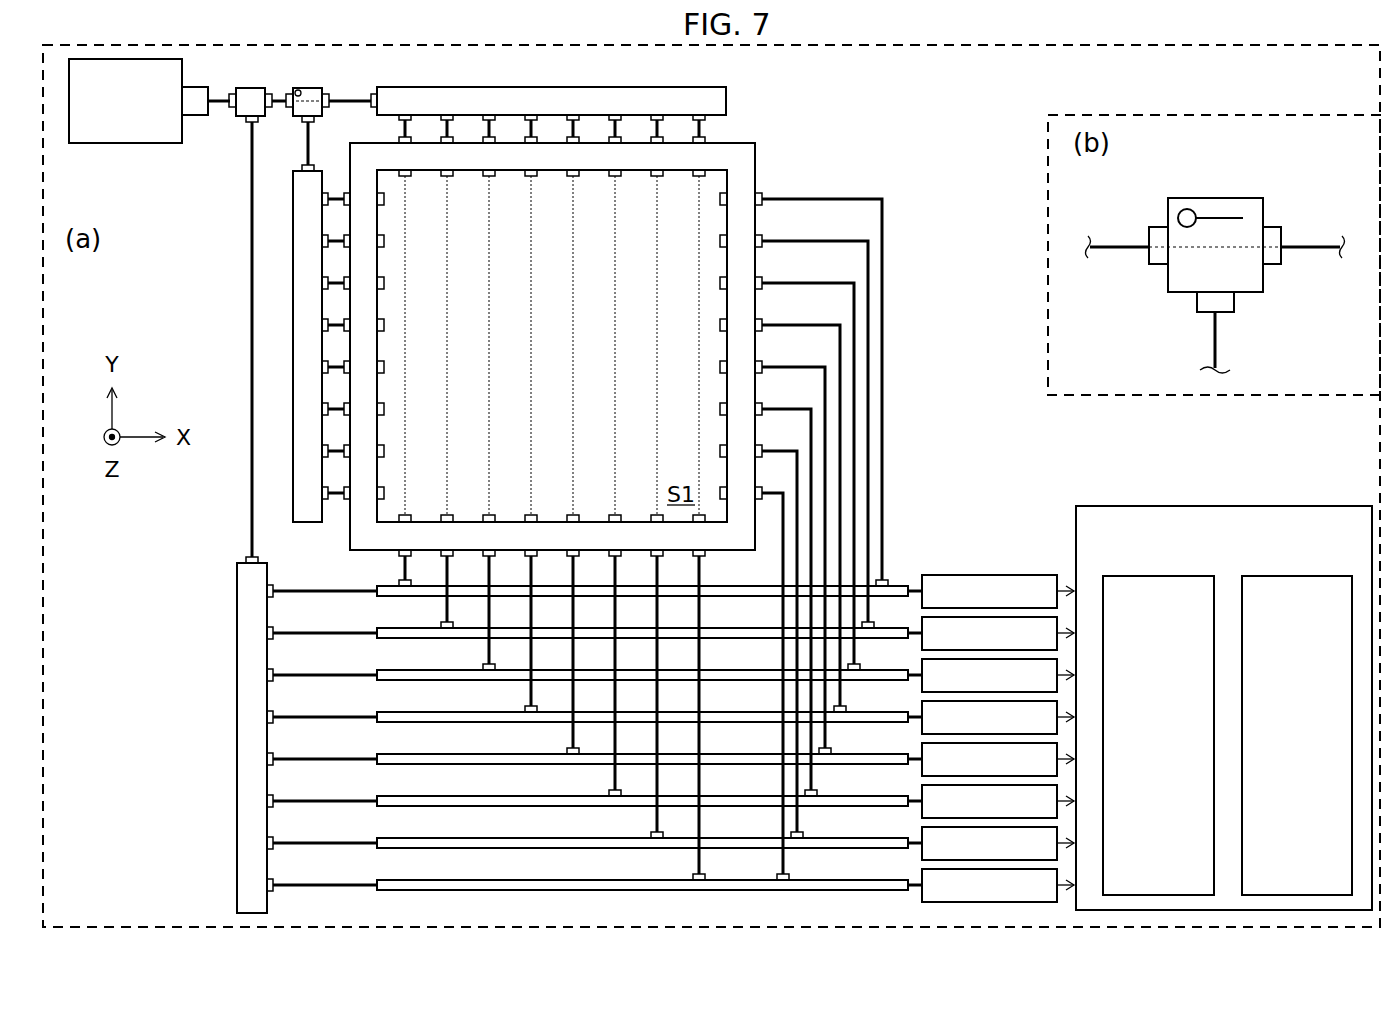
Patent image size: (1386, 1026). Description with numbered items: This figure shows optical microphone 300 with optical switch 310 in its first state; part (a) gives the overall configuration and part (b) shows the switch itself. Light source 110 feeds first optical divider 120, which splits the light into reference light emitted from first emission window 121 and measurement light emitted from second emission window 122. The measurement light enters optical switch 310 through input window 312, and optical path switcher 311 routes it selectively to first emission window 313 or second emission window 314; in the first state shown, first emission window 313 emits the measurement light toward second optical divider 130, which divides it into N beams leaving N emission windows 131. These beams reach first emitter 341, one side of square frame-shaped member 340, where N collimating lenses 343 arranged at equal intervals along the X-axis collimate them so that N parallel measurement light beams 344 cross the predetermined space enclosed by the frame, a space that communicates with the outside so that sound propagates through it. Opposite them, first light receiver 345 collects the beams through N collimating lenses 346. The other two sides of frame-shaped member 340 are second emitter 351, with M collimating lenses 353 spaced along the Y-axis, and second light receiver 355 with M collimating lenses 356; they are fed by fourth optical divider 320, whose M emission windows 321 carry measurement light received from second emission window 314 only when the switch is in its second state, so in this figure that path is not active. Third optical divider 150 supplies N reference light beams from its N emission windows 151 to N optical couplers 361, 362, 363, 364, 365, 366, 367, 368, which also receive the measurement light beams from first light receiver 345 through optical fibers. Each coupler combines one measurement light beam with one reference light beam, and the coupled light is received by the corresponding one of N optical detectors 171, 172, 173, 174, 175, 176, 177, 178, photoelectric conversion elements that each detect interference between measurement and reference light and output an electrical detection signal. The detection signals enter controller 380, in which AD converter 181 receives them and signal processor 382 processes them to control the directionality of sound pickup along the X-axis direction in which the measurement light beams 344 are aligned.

The light source 110 is at (127, 145).
The first optical divider 120 is at (238, 302).
The first emission window 121 is at (250, 123).
The second emission window 122 is at (270, 92).
The second optical divider 130 is at (728, 100).
The emission windows 131 is at (397, 121).
The third optical divider 150 is at (237, 578).
The emission windows 151 is at (267, 592).
The optical detector 171 is at (925, 608).
The optical detector 172 is at (925, 650).
The optical detector 173 is at (925, 692).
The optical detector 174 is at (925, 734).
The optical detector 175 is at (925, 776).
The optical detector 176 is at (925, 818).
The optical detector 177 is at (925, 860).
The optical detector 178 is at (925, 902).
The AD converter 181 is at (1170, 576).
The optical microphone 300 is at (910, 150).
The optical switch 310 is at (312, 88).
The optical path switcher 311 is at (1187, 209).
The input window 312 is at (1149, 240).
The first emission window 313 is at (1281, 240).
The second emission window 314 is at (1218, 313).
The fourth optical divider 320 is at (293, 354).
The emission windows 321 is at (323, 200).
The frame-shaped member 340 is at (757, 150).
The first emitter 341 is at (720, 143).
The collimating lenses 343 is at (420, 177).
The measurement light beams 344 is at (443, 300).
The first light receiver 345 is at (710, 550).
The collimating lenses 346 is at (400, 515).
The second emitter 351 is at (350, 392).
The collimating lenses 353 is at (388, 207).
The second light receiver 355 is at (757, 265).
The collimating lenses 356 is at (713, 203).
The optical coupler 361 is at (400, 597).
The optical coupler 362 is at (400, 639).
The optical coupler 363 is at (400, 681).
The optical coupler 364 is at (400, 723).
The optical coupler 365 is at (400, 765).
The optical coupler 366 is at (400, 807).
The optical coupler 367 is at (400, 849).
The optical coupler 368 is at (400, 891).
The controller 380 is at (1295, 506).
The signal processor 382 is at (1290, 576).